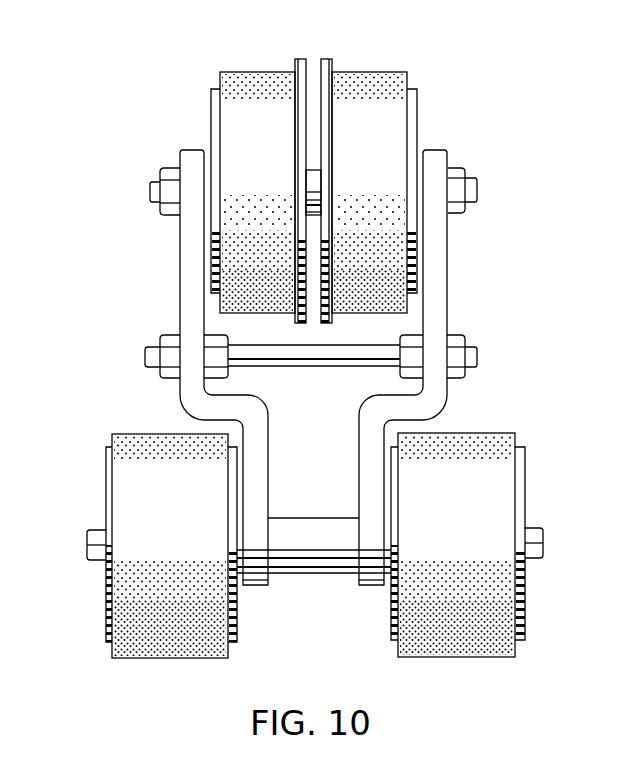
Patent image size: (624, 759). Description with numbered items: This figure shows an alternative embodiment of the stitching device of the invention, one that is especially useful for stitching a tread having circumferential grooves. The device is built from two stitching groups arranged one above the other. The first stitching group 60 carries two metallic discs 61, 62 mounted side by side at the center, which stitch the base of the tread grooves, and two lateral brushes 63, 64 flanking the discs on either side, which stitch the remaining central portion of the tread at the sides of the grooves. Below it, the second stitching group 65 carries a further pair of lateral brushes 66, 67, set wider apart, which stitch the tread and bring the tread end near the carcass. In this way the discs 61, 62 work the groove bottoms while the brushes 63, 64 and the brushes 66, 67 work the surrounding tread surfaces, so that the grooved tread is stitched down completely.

The first stitching group 60 is at (200, 84).
The metallic disc 61 is at (302, 59).
The metallic disc 62 is at (327, 59).
The lateral brush 63 is at (230, 126).
The lateral brush 64 is at (385, 126).
The second stitching group 65 is at (92, 474).
The lateral brush 66 is at (133, 590).
The lateral brush 67 is at (493, 598).